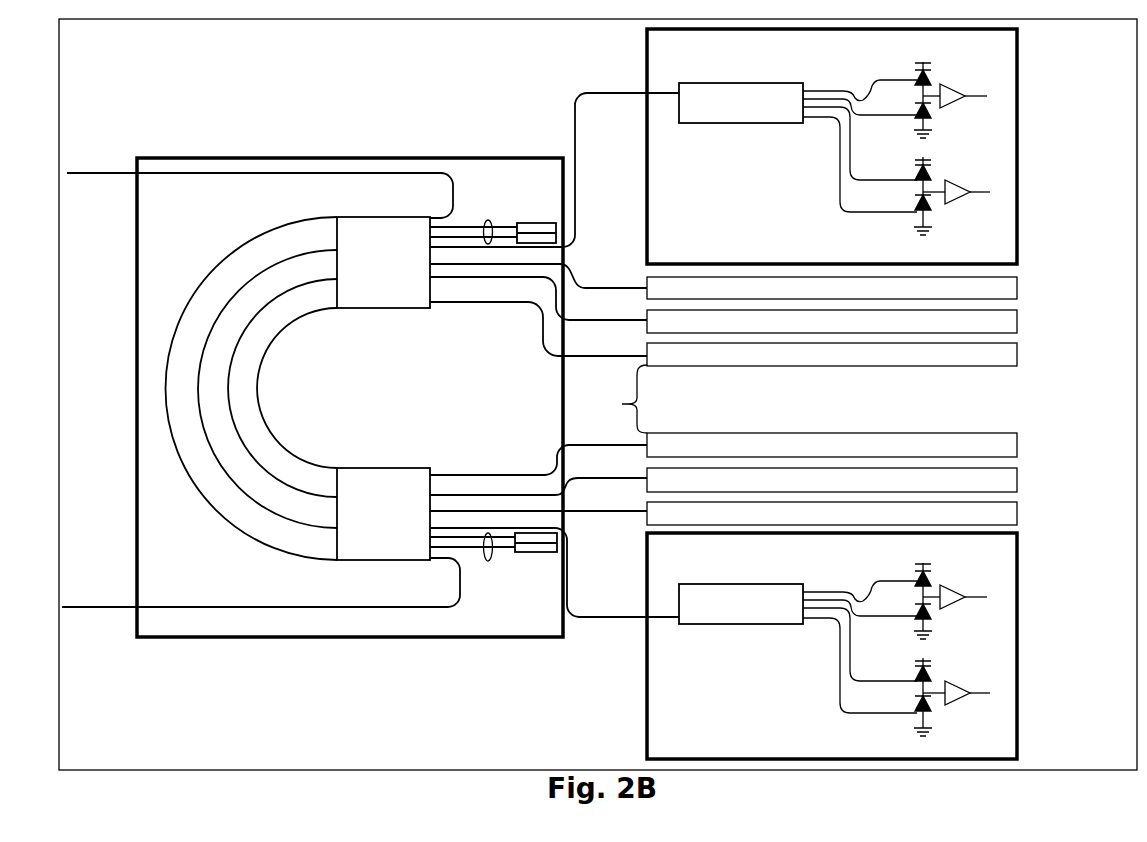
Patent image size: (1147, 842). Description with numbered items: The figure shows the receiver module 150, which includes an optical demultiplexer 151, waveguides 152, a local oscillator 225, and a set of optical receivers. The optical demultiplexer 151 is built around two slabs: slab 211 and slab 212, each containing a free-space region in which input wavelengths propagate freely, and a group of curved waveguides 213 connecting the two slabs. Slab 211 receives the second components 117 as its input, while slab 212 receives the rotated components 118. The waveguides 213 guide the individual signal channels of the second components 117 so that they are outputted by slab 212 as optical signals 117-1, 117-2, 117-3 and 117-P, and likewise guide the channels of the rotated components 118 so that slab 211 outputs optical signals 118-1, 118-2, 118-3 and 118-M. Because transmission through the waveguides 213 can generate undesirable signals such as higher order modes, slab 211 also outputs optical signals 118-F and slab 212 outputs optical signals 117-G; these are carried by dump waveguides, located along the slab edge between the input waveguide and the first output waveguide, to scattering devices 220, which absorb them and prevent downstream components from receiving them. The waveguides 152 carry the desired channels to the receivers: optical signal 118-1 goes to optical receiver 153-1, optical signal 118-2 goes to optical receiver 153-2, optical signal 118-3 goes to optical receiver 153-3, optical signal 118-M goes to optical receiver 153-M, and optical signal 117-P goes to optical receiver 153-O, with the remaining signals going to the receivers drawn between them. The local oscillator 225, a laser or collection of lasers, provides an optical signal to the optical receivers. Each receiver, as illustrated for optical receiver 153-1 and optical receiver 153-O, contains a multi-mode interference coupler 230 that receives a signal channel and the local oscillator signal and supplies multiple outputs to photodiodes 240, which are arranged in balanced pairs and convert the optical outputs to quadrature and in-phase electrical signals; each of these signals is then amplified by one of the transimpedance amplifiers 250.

The receiver module 150 is at (107, 47).
The optical demultiplexer 151 is at (321, 156).
The waveguides 152 is at (558, 699).
The second components 117 is at (90, 173).
The rotated components 118 is at (116, 607).
The waveguides 213 is at (224, 234).
The slab 211 is at (352, 322).
The slab 212 is at (360, 452).
The optical signals 118-F is at (483, 220).
The scattering devices 220 is at (531, 224).
The optical signal 118-1 is at (575, 131).
The optical signal 118-2 is at (572, 268).
The optical signal 118-3 is at (609, 321).
The optical signal 118-M is at (483, 303).
The optical signal 117-1 is at (516, 474).
The optical signal 117-2 is at (587, 479).
The optical signal 117-3 is at (607, 512).
The optical signals 117-G is at (485, 565).
The optical signal 117-P is at (580, 621).
The local oscillator 225 is at (610, 399).
The multi-mode interference (MMI) coupler 230 is at (726, 622).
The photodiodes 240 is at (917, 213).
The transimpedance amplifiers (TIAs) 250 is at (958, 84).
The optical receiver 153-1 is at (1017, 126).
The optical receiver 153-2 is at (1017, 288).
The optical receiver 153-3 is at (1017, 321).
The optical receiver 153-M is at (1017, 354).
The optical receiver 153-O is at (1017, 645).